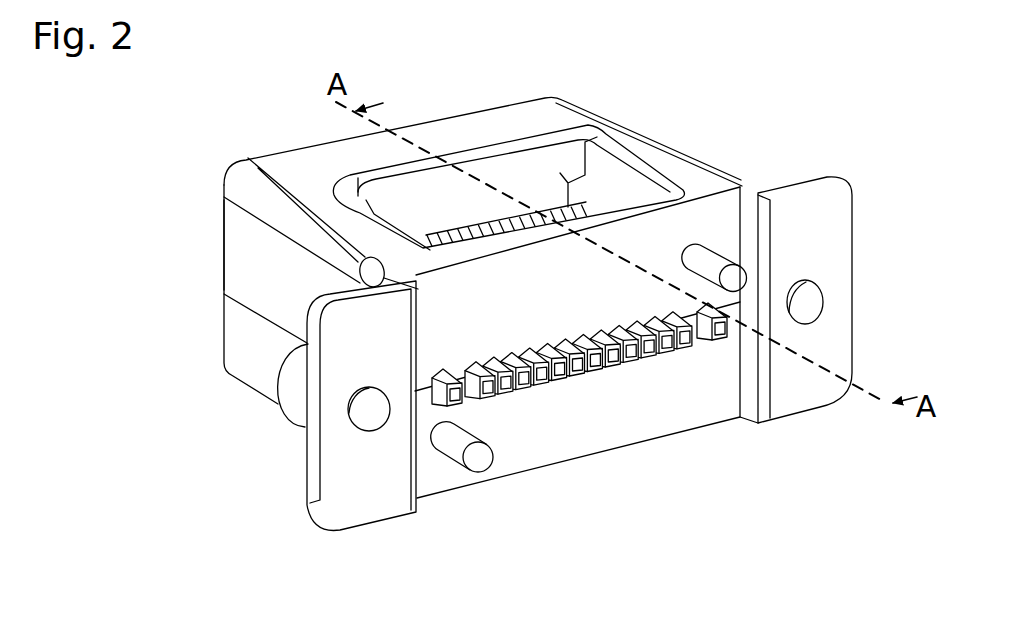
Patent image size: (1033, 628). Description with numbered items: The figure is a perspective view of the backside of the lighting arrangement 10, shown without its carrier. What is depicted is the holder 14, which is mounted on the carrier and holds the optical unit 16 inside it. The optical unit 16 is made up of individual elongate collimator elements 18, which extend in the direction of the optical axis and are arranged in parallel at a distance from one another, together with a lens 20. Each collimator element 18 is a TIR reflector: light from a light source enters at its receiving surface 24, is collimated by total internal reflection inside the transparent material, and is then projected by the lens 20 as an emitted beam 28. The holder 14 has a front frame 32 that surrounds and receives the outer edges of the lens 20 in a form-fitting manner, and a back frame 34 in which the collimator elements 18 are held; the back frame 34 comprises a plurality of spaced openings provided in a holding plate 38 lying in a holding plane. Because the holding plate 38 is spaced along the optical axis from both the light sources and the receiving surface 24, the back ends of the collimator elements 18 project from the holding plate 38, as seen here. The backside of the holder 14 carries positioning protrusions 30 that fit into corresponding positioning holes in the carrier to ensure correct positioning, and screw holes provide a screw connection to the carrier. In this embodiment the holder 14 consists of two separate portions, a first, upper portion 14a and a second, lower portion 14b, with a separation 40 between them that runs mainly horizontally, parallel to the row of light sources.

The lighting arrangement 10 is at (792, 112).
The holder 14 is at (178, 215).
The first, upper portion 14a is at (224, 238).
The second, lower portion 14b is at (224, 348).
The optical unit 16 is at (442, 216).
The collimator elements 18 is at (545, 208).
The lens 20 is at (417, 221).
The receiving surface 24 is at (675, 344).
The emitted beam 28 is at (347, 403).
The positioning protrusions 30 is at (701, 258).
The front frame 32 is at (388, 132).
The back frame 34 is at (648, 205).
The holding plate 38 is at (448, 308).
The separation 40 is at (224, 295).